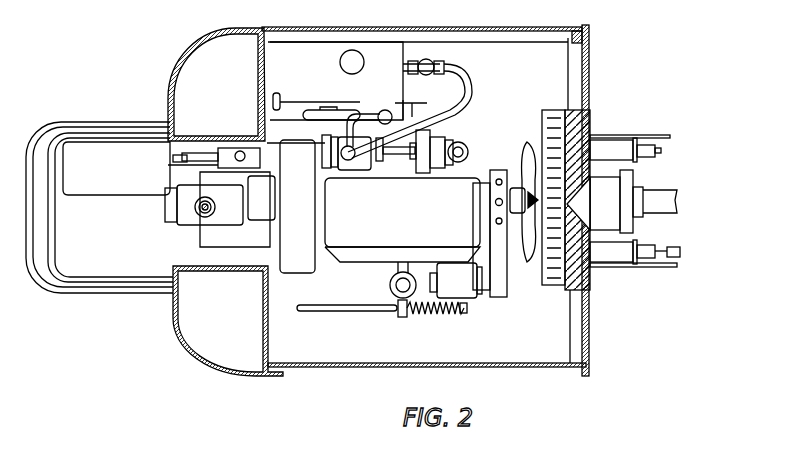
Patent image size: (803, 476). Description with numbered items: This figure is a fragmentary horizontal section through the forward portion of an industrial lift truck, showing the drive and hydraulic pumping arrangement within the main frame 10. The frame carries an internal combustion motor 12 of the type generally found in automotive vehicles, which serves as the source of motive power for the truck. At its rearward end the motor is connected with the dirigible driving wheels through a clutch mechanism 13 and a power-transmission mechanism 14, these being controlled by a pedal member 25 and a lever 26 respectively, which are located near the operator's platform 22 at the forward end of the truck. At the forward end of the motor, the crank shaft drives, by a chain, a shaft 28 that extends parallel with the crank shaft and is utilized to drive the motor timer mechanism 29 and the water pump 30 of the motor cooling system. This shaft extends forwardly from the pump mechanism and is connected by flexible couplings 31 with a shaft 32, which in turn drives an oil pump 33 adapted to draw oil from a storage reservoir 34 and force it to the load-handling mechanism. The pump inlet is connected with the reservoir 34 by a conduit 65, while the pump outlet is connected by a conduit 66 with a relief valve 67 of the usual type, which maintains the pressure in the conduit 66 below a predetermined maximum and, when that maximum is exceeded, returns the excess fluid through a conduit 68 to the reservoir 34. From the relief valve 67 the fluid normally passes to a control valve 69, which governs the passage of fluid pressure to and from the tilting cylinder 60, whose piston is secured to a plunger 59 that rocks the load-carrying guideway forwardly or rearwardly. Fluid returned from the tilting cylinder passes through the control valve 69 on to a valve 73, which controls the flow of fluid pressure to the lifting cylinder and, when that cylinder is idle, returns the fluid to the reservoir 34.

The main frame 10 is at (633, 270).
The internal combustion motor 12 is at (402, 220).
The clutch mechanism 13 is at (296, 206).
The power-transmission mechanism 14 is at (204, 205).
The operator's platform 22 is at (99, 207).
The pedal member 25 is at (116, 168).
The lever 26 is at (197, 218).
The shaft 28 is at (468, 138).
The motor timer mechanism 29 is at (481, 147).
The water pump 30 is at (428, 134).
The flexible couplings 31 is at (386, 165).
The shaft 32 is at (376, 162).
The oil pump 33 is at (333, 168).
The storage reservoir 34 is at (336, 81).
The plunger 59 is at (656, 192).
The tilting cylinder 60 is at (616, 201).
The conduit 65 is at (468, 82).
The conduit 66 is at (355, 145).
The relief valve 67 is at (394, 118).
The conduit 68 is at (320, 120).
The control valve 69 is at (630, 148).
The valve 73 is at (635, 253).